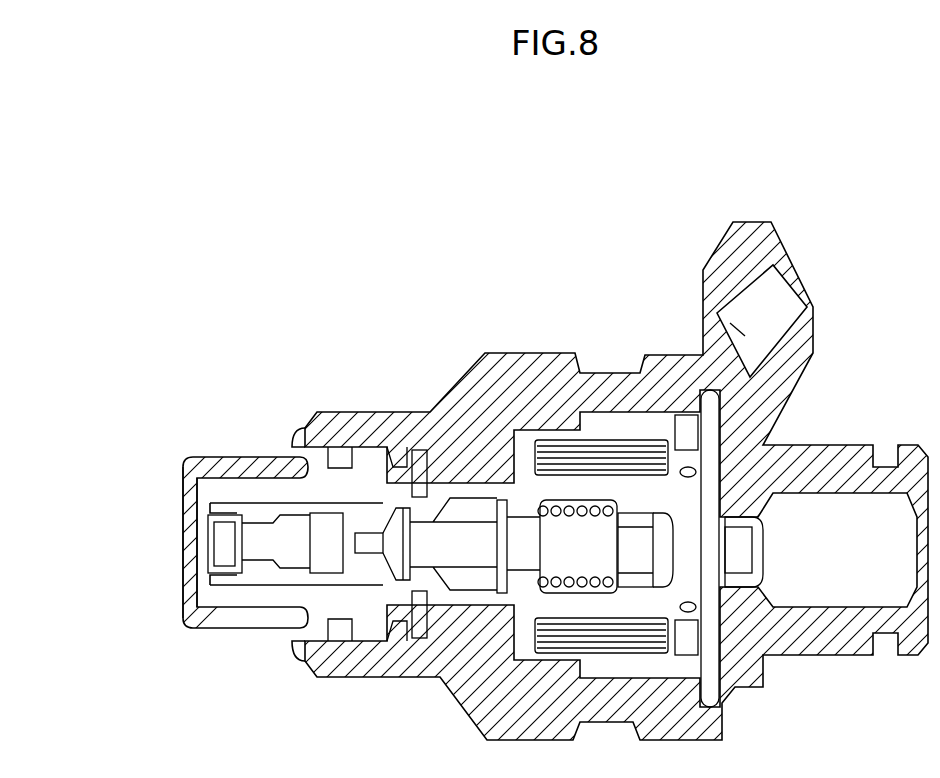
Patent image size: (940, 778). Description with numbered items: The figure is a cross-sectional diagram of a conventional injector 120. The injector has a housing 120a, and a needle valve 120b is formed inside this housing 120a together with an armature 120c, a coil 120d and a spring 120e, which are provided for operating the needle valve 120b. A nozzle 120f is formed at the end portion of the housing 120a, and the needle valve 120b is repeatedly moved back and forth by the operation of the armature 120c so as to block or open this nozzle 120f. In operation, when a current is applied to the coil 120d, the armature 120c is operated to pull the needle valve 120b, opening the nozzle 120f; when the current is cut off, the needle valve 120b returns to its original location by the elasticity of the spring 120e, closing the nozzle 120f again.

The injector 120 is at (543, 346).
The housing 120a is at (475, 367).
The needle valve 120b is at (227, 527).
The armature 120c is at (458, 533).
The coil 120d is at (652, 440).
The spring 120e is at (592, 500).
The nozzle 120f is at (182, 541).